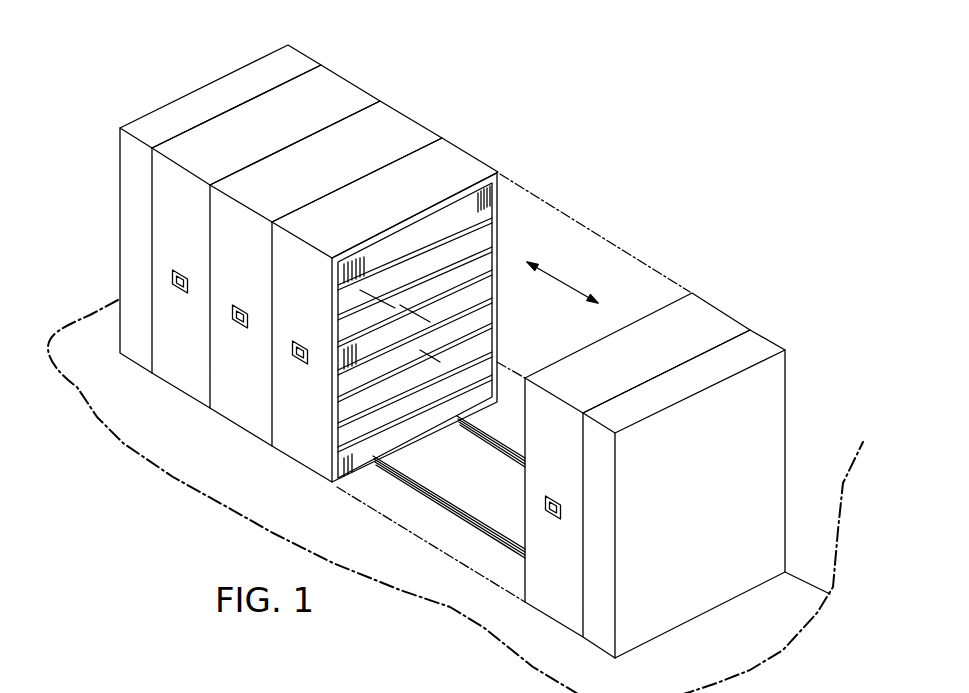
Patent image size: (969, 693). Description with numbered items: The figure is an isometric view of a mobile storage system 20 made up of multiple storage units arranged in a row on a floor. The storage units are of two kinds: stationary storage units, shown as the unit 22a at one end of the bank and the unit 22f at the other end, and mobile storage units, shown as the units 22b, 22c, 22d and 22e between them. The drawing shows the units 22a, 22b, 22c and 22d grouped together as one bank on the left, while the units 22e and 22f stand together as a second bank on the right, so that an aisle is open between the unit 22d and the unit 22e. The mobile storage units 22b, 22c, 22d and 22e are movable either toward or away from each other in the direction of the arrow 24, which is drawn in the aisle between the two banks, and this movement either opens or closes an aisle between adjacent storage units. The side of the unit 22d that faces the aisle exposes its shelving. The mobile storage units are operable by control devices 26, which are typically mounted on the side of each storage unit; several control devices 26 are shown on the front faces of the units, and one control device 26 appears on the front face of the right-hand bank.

The mobile storage system 20 is at (587, 92).
The stationary storage unit 22a is at (223, 110).
The mobile storage unit 22b is at (335, 102).
The mobile storage unit 22c is at (387, 145).
The mobile storage unit 22d is at (448, 173).
The mobile storage unit 22e is at (707, 327).
The stationary storage unit 22f is at (750, 352).
The arrow 24 is at (562, 282).
The control device 26 is at (237, 303).